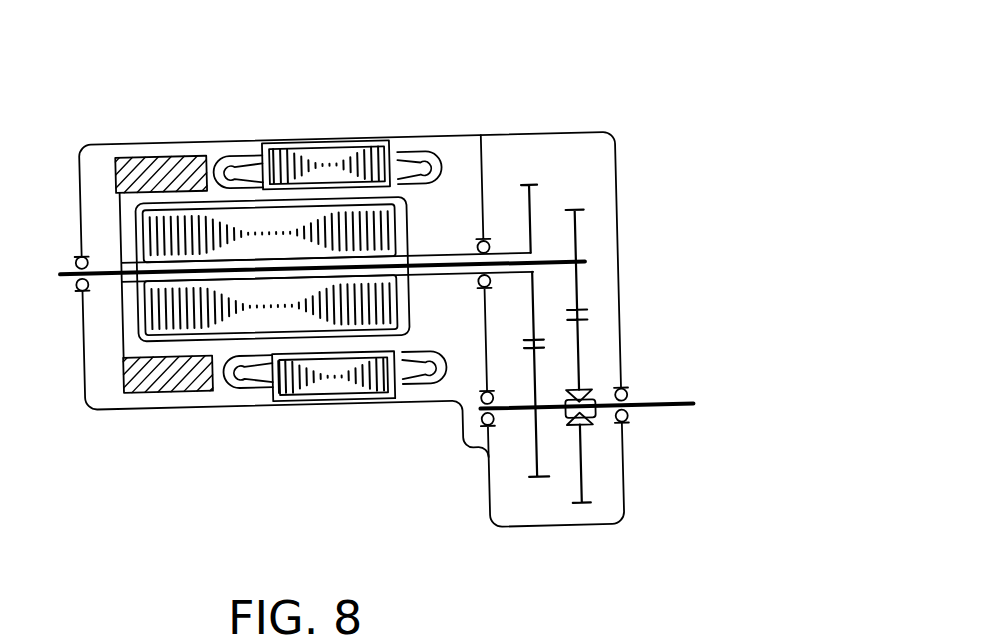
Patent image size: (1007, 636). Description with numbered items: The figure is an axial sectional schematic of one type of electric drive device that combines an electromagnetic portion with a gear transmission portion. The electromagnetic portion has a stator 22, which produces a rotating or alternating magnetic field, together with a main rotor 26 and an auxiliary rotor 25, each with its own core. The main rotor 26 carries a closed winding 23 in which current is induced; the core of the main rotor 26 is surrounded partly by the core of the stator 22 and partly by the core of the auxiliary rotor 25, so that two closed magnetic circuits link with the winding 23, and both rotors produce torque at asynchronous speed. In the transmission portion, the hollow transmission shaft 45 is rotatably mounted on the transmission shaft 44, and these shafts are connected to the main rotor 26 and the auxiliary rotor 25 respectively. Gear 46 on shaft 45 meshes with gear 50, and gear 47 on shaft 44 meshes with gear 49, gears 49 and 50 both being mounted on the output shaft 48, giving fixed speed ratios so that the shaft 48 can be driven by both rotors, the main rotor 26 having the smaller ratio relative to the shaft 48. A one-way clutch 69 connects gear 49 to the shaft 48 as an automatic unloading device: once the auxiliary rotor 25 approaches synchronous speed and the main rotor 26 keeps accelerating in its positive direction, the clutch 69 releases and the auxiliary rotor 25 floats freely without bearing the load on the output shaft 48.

The stator 22 is at (313, 150).
The main rotor winding 23 is at (240, 203).
The auxiliary rotor 25 is at (140, 168).
The main rotor 26 is at (198, 225).
The transmission shaft 44 is at (550, 257).
The transmission shaft 45 is at (497, 253).
The gear 46 is at (537, 176).
The gear 47 is at (575, 228).
The transmission shaft 48 is at (647, 407).
The gear 49 is at (583, 473).
The gear 50 is at (537, 448).
The one-way clutch 69 is at (583, 430).